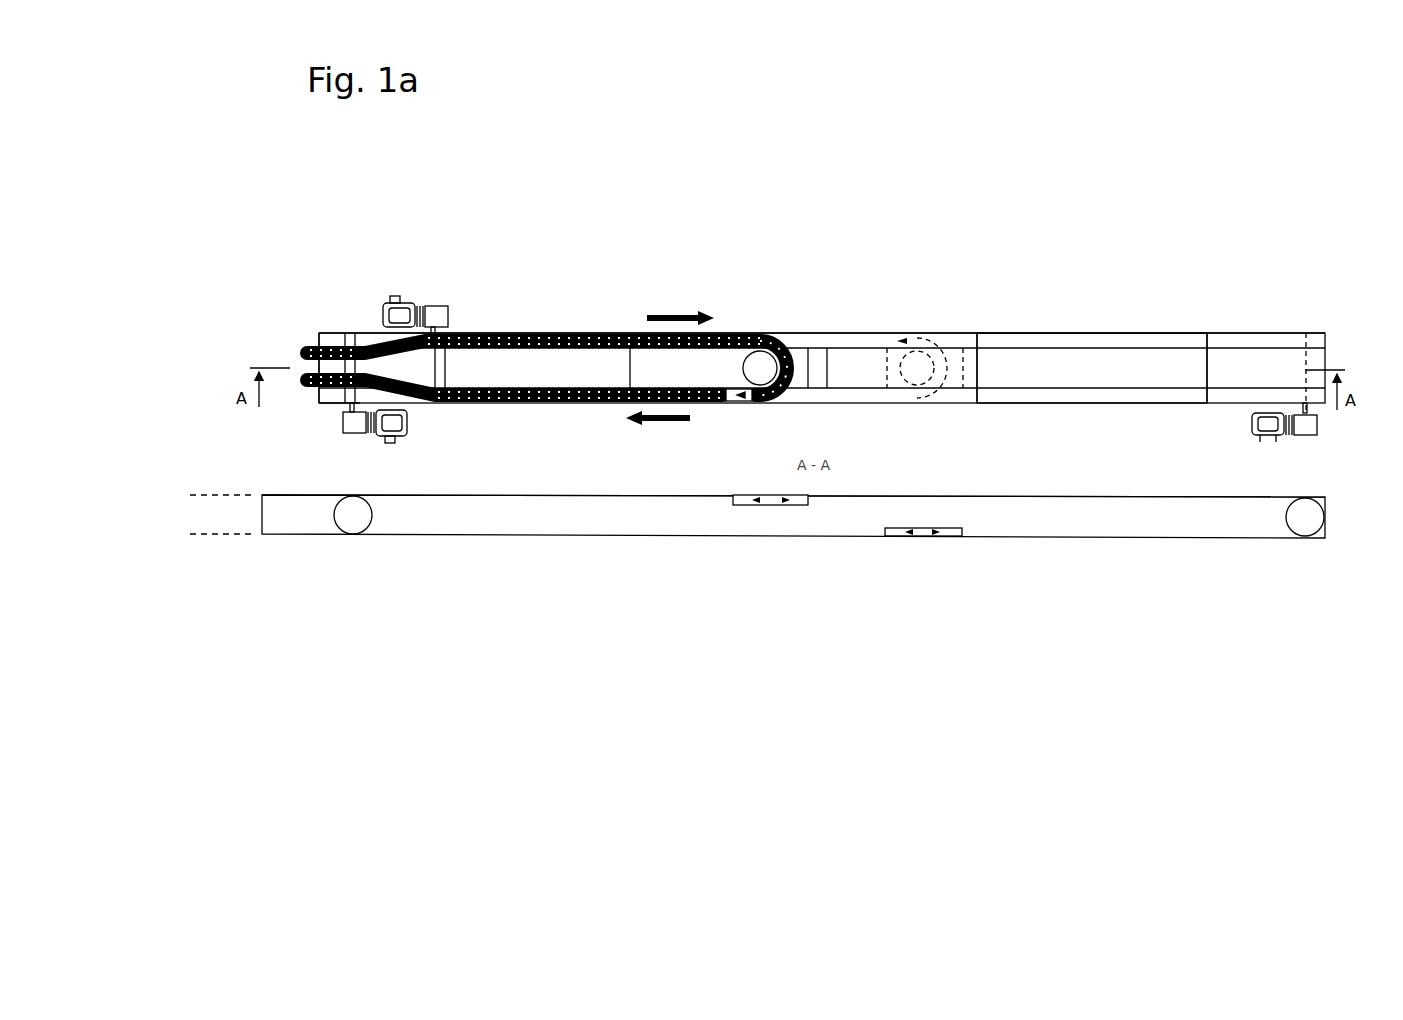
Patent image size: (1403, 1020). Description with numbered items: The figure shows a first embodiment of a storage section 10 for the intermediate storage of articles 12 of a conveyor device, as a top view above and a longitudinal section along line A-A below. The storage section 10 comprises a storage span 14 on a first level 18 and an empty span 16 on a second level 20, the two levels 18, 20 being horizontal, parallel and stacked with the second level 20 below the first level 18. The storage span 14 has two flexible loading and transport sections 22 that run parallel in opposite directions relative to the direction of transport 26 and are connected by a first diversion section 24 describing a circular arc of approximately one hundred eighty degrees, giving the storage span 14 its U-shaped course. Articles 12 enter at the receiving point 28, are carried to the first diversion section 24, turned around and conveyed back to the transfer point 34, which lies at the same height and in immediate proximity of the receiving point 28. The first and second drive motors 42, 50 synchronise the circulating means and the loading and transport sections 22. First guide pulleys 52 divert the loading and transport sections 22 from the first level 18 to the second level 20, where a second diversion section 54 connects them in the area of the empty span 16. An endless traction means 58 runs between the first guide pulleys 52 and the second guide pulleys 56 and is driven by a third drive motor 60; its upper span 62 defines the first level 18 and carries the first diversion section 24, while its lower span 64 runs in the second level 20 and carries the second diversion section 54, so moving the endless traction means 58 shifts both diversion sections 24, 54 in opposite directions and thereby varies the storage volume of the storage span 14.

The storage section 10 is at (1200, 692).
The articles 12 is at (547, 347).
The storage span 14 is at (727, 322).
The empty span 16 is at (860, 332).
The first level 18 is at (232, 495).
The second level 20 is at (215, 535).
The loading and transport sections 22 is at (548, 333).
The first diversion section 24 is at (757, 385).
The direction of transport 26 is at (670, 369).
The receiving point 28 is at (312, 320).
The transfer point 34 is at (318, 405).
The first drive motor 42 is at (388, 278).
The second drive motor 50 is at (407, 437).
The first guide pulleys 52 is at (355, 517).
The second diversion section 54 is at (917, 385).
The second guide pulleys 56 is at (1305, 520).
The endless traction means 58 is at (1055, 380).
The third drive motor 60 is at (1248, 435).
The upper span 62 is at (1100, 497).
The lower span 64 is at (1128, 538).